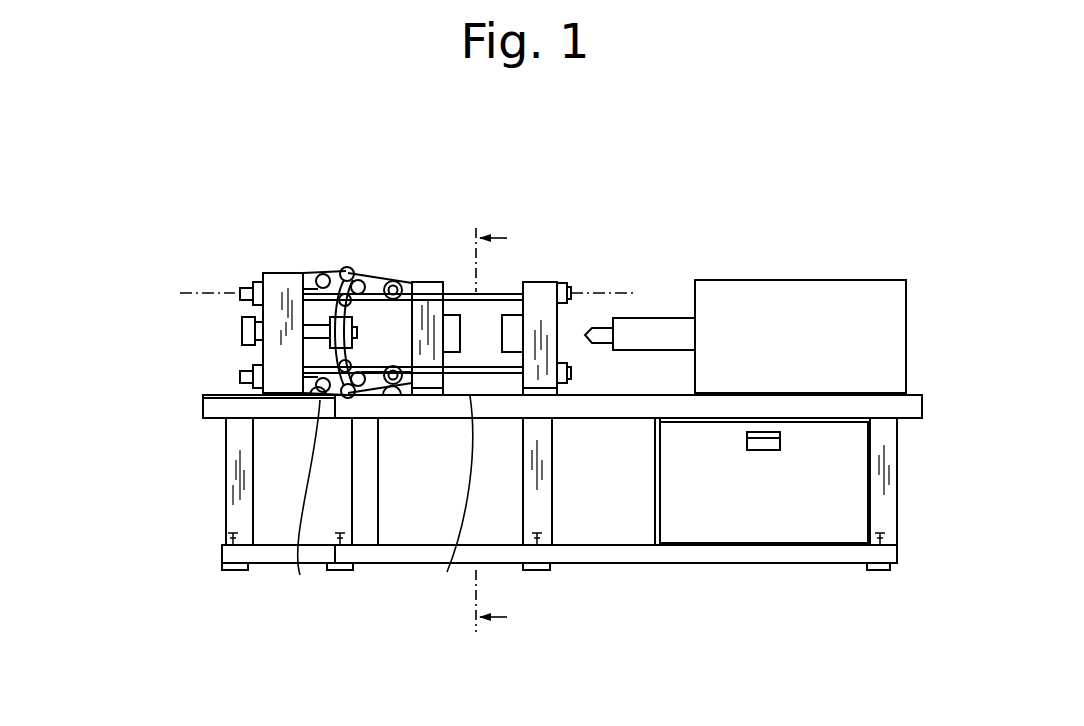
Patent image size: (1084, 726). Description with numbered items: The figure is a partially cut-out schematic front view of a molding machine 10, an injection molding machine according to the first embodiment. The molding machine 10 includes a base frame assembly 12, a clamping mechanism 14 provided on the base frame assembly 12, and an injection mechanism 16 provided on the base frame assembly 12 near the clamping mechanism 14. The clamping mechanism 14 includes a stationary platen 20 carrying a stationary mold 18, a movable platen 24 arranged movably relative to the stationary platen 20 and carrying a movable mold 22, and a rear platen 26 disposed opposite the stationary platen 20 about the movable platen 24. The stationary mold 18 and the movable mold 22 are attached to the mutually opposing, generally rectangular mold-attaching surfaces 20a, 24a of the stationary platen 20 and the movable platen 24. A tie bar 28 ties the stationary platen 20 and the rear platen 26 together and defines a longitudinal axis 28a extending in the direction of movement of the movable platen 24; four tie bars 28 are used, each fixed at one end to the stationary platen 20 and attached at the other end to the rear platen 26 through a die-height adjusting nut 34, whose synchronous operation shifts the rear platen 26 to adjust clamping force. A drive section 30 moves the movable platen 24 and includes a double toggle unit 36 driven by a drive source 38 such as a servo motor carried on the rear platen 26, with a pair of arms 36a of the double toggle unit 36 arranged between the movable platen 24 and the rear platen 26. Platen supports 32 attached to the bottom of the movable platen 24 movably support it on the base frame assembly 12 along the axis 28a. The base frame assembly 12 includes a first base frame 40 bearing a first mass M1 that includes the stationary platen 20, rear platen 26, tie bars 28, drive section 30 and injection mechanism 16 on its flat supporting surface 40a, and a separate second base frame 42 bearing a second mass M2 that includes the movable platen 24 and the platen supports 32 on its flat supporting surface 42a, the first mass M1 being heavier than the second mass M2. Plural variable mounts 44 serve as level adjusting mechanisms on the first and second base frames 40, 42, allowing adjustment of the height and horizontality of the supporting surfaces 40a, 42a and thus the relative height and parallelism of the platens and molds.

The molding machine 10 is at (702, 214).
The base frame assembly 12 is at (185, 467).
The clamping mechanism 14 is at (575, 264).
The injection mechanism 16 is at (768, 264).
The stationary mold 18 is at (516, 328).
The stationary platen 20 is at (544, 282).
The mold-attaching surface 20a is at (518, 362).
The movable mold 22 is at (453, 355).
The movable platen 24 is at (425, 282).
The mold-attaching surface 24a is at (458, 355).
The rear platen 26 is at (280, 280).
The tie bar 28 is at (465, 282).
The longitudinal axis 28a is at (620, 280).
The drive section 30 is at (310, 347).
The platen support 32 is at (430, 398).
The die-height adjusting nut 34 is at (255, 278).
The double toggle unit 36 is at (353, 262).
The arm 36a is at (338, 271).
The drive source 38 is at (242, 332).
The first base frame 40 is at (260, 556).
The supporting surface 40a is at (228, 395).
The second base frame 42 is at (387, 556).
The supporting surface 42a is at (378, 420).
The variable mount 44 is at (225, 565).
The first mass M1 is at (554, 178).
The second mass M2 is at (429, 186).